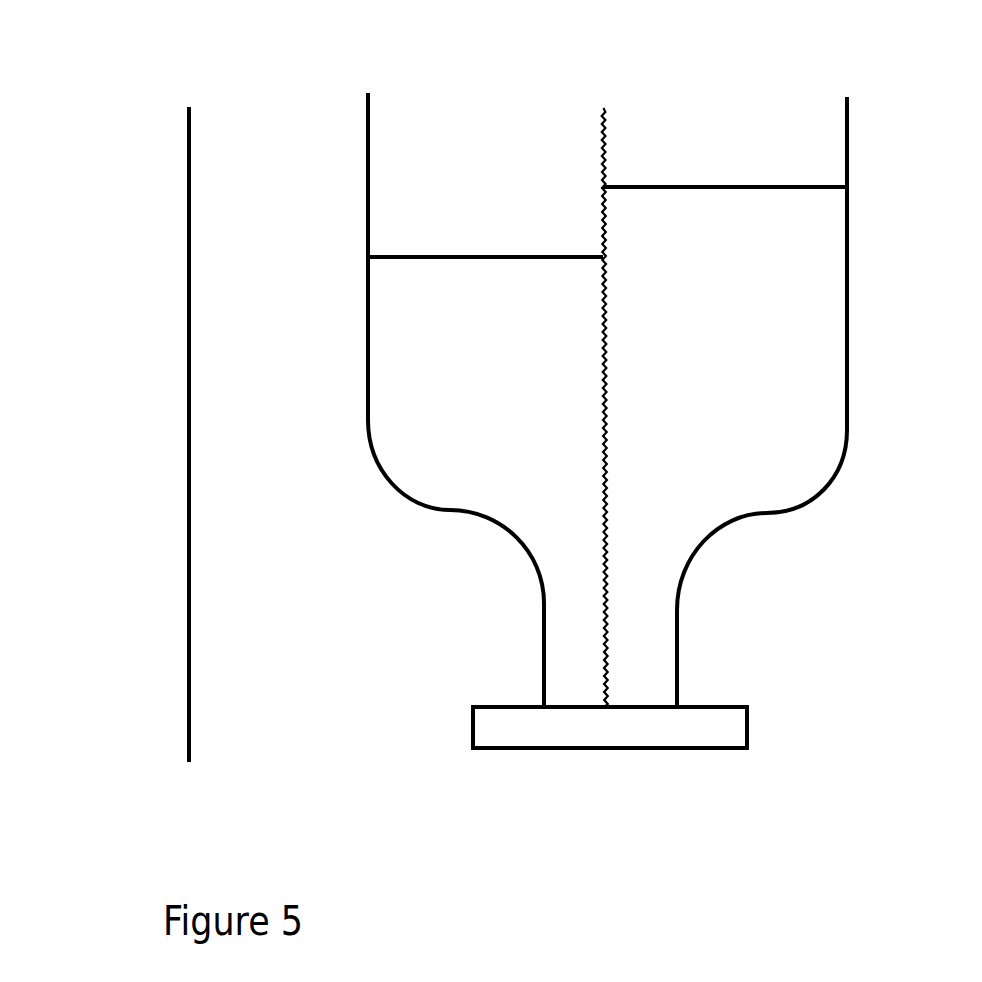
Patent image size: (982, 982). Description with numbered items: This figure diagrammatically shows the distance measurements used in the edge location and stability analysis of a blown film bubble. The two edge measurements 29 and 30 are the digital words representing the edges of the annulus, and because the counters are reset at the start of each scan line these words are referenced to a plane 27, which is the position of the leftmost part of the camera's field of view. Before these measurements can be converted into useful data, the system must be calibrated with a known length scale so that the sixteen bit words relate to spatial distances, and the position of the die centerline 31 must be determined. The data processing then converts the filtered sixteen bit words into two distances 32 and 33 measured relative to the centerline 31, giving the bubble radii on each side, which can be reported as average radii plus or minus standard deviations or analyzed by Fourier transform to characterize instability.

The plane 27 is at (189, 670).
The edge measurement 29 is at (367, 310).
The edge measurement 30 is at (832, 372).
The centerline 31 is at (603, 400).
The distance 32 is at (499, 257).
The distance 33 is at (729, 187).